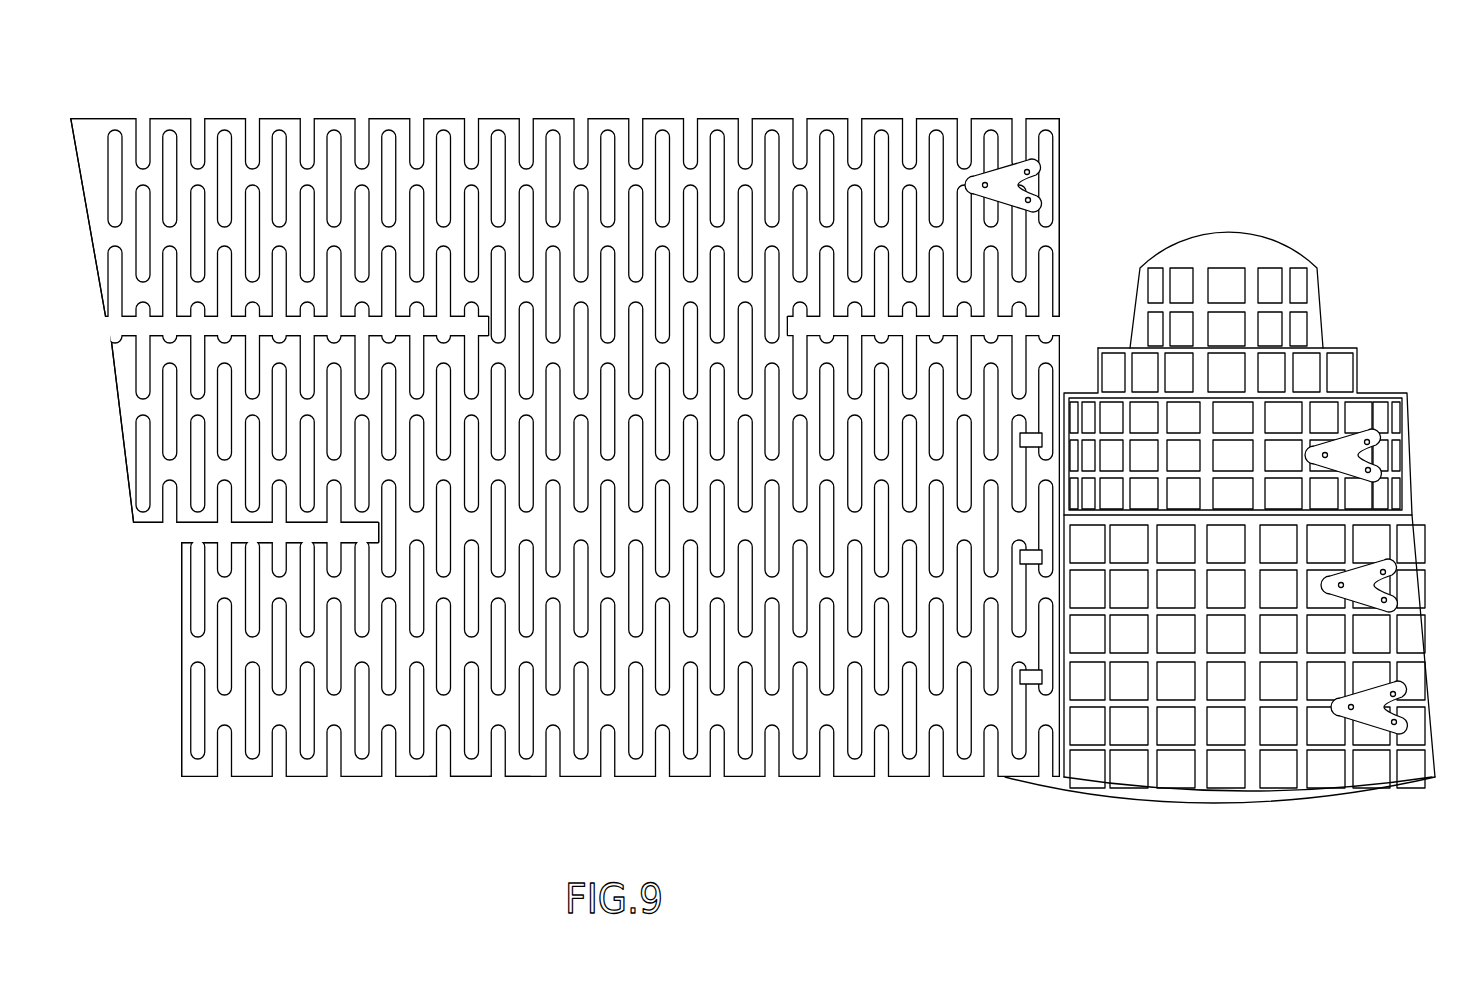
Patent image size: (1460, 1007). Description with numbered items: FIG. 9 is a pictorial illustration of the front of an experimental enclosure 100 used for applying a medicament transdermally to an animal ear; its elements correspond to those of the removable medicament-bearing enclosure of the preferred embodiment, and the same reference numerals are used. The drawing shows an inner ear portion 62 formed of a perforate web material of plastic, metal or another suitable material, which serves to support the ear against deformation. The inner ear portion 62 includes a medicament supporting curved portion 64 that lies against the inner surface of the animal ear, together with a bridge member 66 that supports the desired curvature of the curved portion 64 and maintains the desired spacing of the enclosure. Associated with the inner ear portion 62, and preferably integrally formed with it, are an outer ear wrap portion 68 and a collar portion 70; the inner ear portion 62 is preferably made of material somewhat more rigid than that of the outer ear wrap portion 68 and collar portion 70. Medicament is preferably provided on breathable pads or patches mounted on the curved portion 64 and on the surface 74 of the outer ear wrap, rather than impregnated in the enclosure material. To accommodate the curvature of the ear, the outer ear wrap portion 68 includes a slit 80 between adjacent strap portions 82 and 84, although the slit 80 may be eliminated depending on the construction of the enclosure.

The enclosure 100 is at (744, 465).
The collar portion 70 is at (668, 98).
The outer ear wrap portion 68 is at (546, 465).
The surface of outer ear wrap 74 is at (480, 777).
The slit 80 is at (205, 541).
The strap portion 82 is at (160, 462).
The strap portion 84 is at (205, 648).
The inner ear portion 62 is at (1230, 555).
The medicament supporting curved portion 64 is at (1253, 806).
The bridge member 66 is at (1410, 424).